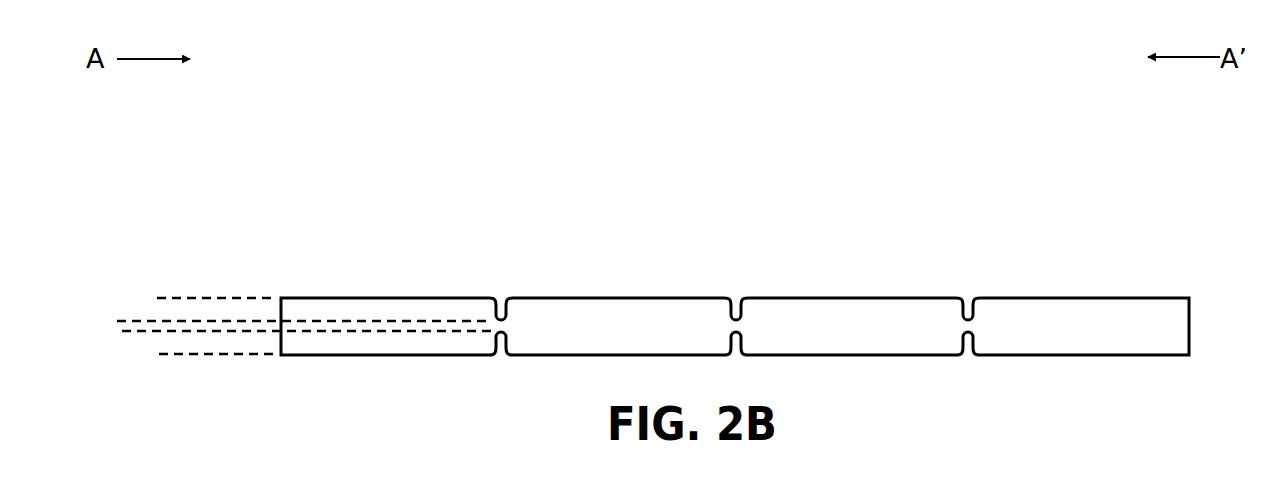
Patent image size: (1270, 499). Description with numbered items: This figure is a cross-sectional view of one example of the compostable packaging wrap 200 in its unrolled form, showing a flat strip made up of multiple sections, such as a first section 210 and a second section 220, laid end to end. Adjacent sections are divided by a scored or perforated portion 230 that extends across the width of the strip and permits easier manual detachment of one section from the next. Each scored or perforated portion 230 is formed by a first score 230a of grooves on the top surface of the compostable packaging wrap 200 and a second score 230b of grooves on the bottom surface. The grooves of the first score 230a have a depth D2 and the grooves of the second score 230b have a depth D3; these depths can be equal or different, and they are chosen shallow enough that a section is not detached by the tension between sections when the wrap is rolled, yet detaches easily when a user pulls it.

The compostable packaging wrap 200 is at (195, 204).
The first section 210 is at (373, 297).
The second section 220 is at (673, 296).
The scored or perforated portion 230 is at (629, 105).
The first score 230a is at (497, 302).
The second score 230b is at (510, 341).
The depth of the first score D2 is at (234, 321).
The depth of the second score D3 is at (203, 302).